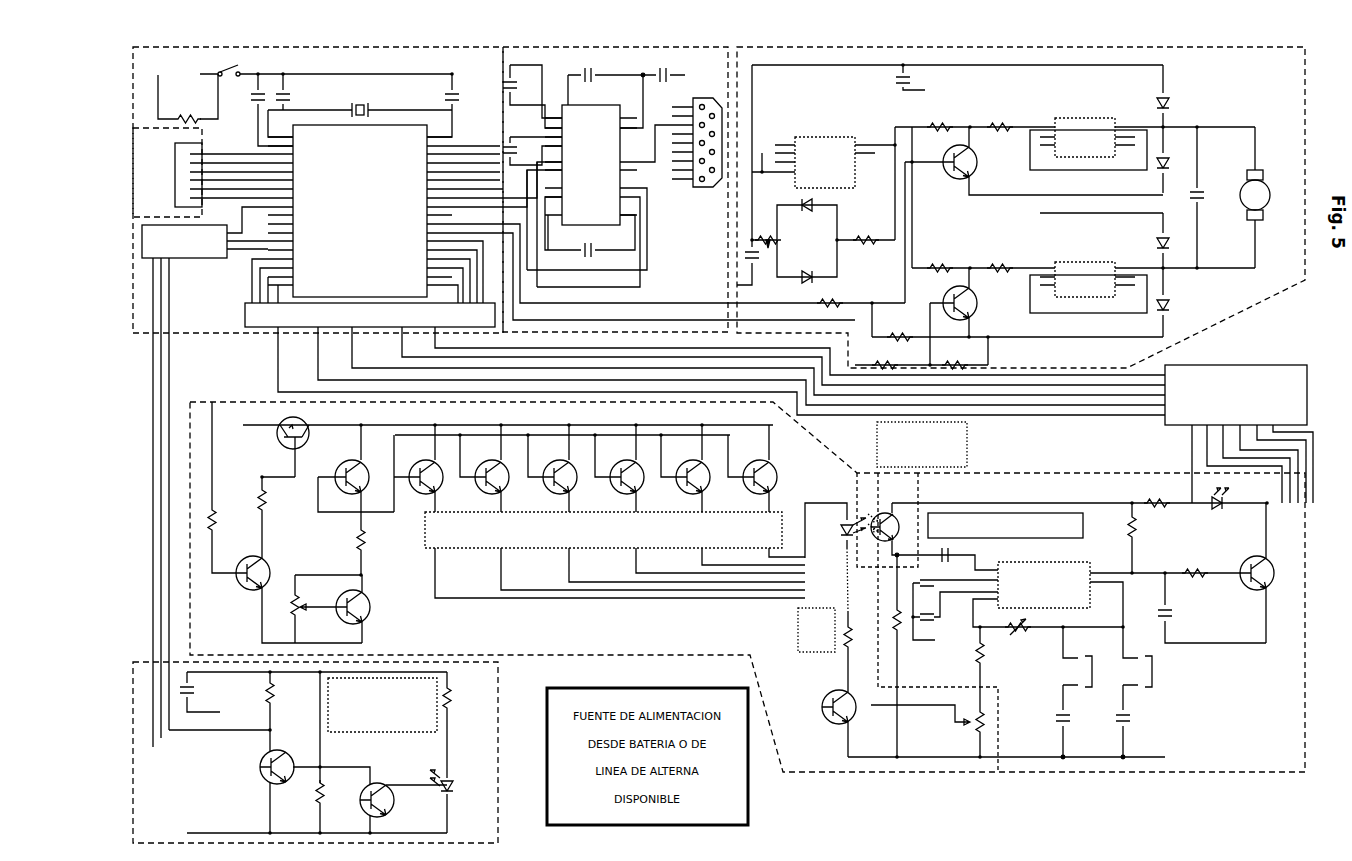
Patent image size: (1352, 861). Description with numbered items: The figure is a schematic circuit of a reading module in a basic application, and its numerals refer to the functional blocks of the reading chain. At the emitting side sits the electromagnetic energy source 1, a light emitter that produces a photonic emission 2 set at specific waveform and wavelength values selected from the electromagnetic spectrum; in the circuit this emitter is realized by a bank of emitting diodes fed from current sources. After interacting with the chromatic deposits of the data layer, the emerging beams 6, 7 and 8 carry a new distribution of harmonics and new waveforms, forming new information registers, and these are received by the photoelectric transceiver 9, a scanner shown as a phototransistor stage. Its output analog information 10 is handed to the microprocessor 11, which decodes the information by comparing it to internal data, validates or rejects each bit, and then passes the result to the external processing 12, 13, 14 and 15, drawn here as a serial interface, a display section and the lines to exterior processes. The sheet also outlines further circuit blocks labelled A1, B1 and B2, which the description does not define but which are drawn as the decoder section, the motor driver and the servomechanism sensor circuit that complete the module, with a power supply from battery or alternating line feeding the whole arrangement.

The microprocessor 11 is at (649, 397).
The external processing 12 is at (615, 189).
The external processing 13 is at (200, 172).
The external processing 14 is at (476, 130).
The external processing 15 is at (477, 150).
The motor driver circuit B1 is at (1018, 208).
The decoder circuit A1 is at (1239, 533).
The servomechanism sensors circuit B2 is at (315, 748).
The electromagnetic energy source 1 is at (535, 522).
The photonic emission 2 is at (876, 682).
The emerging beam 6 is at (1006, 597).
The emerging beam 7 is at (1074, 693).
The emerging beam 8 is at (1134, 693).
The photoelectric transceiver 9 is at (927, 615).
The output analog information 10 is at (1098, 564).